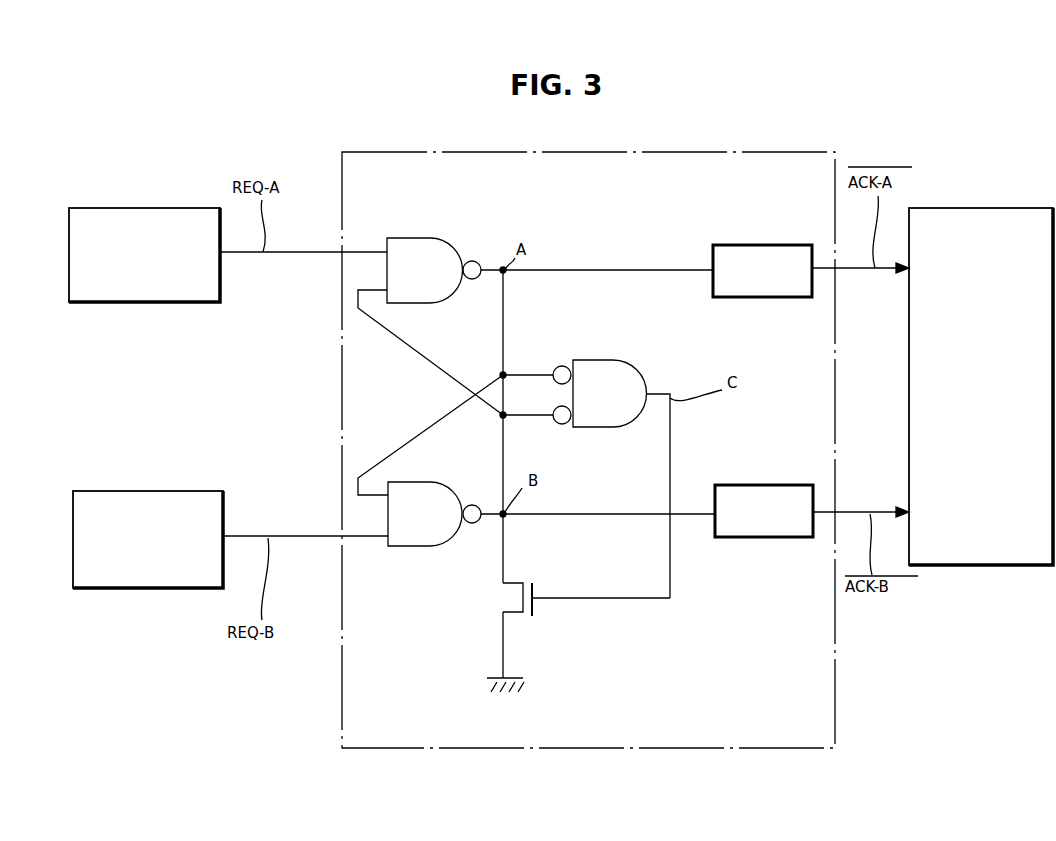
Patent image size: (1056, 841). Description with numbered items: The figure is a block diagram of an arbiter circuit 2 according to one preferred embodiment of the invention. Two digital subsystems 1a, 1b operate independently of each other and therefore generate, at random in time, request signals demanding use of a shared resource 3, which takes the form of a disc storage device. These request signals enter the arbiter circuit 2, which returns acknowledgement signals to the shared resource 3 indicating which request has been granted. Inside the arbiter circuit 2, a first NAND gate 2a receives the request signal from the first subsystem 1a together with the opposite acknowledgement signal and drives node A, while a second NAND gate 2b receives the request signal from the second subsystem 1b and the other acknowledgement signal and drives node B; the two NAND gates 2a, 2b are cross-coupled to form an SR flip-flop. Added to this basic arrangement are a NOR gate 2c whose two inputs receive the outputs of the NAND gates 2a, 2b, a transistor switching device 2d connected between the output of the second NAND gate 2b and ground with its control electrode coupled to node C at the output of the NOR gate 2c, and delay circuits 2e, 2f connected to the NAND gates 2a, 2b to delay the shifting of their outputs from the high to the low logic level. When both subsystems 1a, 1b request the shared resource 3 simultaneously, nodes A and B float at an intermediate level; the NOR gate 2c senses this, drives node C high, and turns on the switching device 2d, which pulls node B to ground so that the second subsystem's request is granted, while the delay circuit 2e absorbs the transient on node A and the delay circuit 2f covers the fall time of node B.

The digital subsystem 1a is at (146, 208).
The digital subsystem 1b is at (148, 491).
The arbiter circuit 2 is at (772, 152).
The first NAND gate 2a is at (413, 238).
The second NAND gate 2b is at (428, 547).
The NOR gate 2c is at (613, 360).
The transistor switching device 2d is at (522, 582).
The delay circuit 2e is at (750, 245).
The delay circuit 2f is at (758, 485).
The shared resource 3 is at (968, 208).